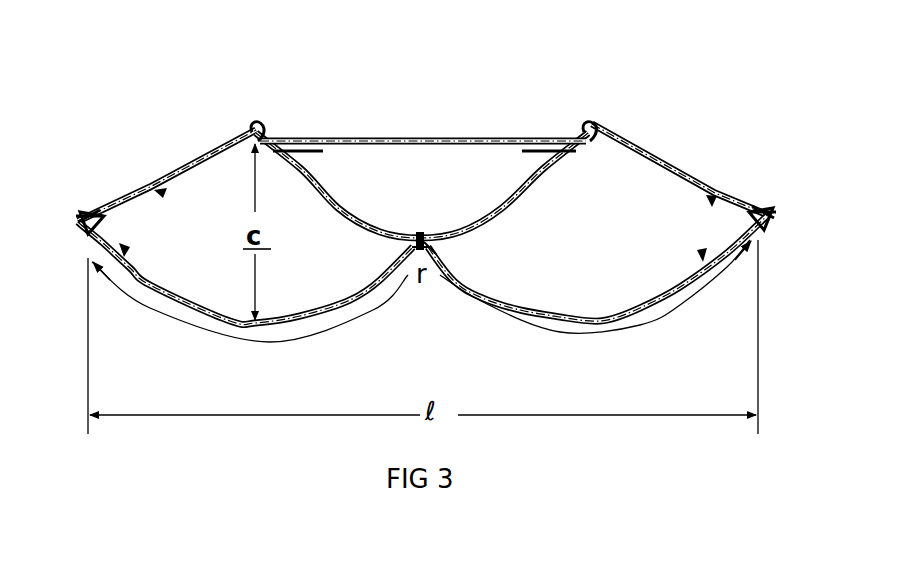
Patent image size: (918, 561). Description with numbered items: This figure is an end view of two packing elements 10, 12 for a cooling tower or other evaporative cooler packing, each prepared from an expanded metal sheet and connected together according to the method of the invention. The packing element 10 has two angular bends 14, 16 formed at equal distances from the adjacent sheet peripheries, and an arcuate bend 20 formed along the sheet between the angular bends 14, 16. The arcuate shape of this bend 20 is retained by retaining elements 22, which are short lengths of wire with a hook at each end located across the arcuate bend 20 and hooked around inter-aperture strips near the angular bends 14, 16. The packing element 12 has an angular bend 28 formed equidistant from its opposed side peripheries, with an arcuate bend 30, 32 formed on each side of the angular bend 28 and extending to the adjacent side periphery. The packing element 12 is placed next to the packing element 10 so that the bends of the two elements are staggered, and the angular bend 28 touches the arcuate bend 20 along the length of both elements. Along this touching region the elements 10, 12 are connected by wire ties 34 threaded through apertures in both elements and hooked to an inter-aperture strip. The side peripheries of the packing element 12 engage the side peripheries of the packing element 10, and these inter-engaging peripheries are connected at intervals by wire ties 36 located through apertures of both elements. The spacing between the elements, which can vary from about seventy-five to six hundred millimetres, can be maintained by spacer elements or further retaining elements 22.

The packing element 10 is at (697, 163).
The packing element 12 is at (233, 332).
The angular bend 14 is at (260, 122).
The angular bend 16 is at (641, 80).
The arcuate bend 20 is at (369, 239).
The retaining element 22 is at (452, 138).
The angular bend 28 is at (447, 249).
The arcuate bend 30 is at (318, 330).
The arcuate bend 32 is at (634, 320).
The wire tie 34 is at (423, 236).
The wire tie 36 is at (106, 214).